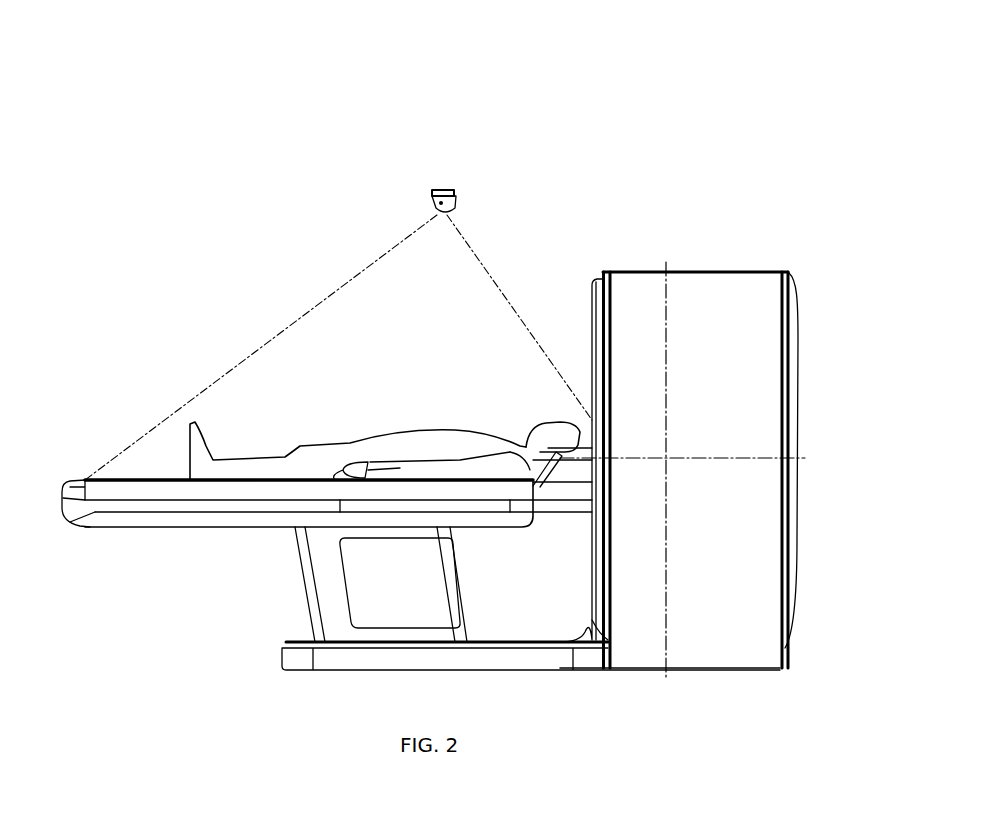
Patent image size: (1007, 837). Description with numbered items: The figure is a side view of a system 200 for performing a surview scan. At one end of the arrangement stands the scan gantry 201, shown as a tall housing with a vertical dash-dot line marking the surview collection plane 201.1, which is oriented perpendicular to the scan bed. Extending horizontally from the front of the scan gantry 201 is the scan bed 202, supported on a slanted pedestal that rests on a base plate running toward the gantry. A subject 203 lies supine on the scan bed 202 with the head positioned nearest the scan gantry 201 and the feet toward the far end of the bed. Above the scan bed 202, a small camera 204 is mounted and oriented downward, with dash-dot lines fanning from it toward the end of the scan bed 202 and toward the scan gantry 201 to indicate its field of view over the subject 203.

The system for surview scan 200 is at (634, 124).
The scan gantry 201 is at (636, 336).
The surview collection plane 201.1 is at (668, 355).
The scan bed 202 is at (219, 498).
The subject 203 is at (259, 461).
The camera 204 is at (432, 195).